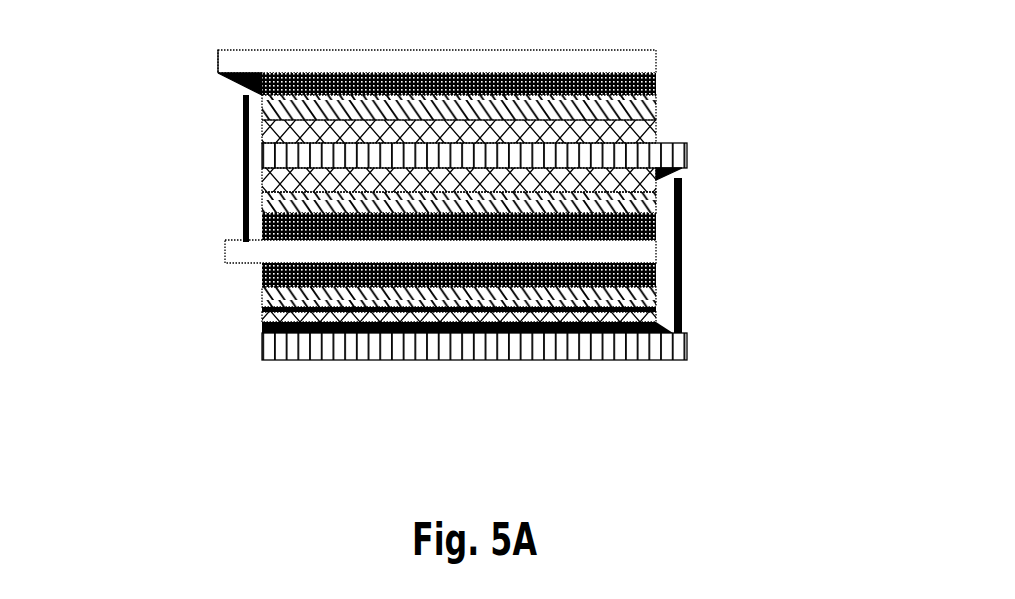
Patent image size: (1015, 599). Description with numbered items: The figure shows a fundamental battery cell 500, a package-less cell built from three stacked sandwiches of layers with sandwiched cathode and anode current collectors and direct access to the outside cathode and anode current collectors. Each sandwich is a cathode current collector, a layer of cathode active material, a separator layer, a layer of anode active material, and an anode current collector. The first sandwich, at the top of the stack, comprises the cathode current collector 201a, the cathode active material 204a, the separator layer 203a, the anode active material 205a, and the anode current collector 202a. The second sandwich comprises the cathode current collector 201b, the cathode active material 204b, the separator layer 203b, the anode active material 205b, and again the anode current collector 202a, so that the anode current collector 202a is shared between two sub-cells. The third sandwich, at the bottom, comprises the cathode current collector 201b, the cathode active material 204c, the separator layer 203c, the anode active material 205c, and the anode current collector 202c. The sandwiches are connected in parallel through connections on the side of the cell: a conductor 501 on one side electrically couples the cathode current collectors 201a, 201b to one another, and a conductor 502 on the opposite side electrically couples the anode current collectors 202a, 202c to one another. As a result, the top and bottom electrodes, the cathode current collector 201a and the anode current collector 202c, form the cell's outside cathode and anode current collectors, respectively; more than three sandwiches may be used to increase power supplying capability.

The fundamental battery cell 500 is at (899, 69).
The conductor 501 is at (243, 140).
The conductor 502 is at (683, 252).
The cathode current collector 201a is at (645, 55).
The cathode current collector 201b is at (225, 248).
The anode current collector 202a is at (688, 165).
The anode current collector 202c is at (282, 352).
The separator layer 203a is at (648, 107).
The separator layer 203b is at (265, 208).
The separator layer 203c is at (282, 293).
The cathode active material 204a is at (645, 85).
The cathode active material 204b is at (265, 233).
The cathode active material 204c is at (262, 287).
The anode active material 205a is at (650, 137).
The anode active material 205b is at (265, 186).
The anode active material 205c is at (277, 317).